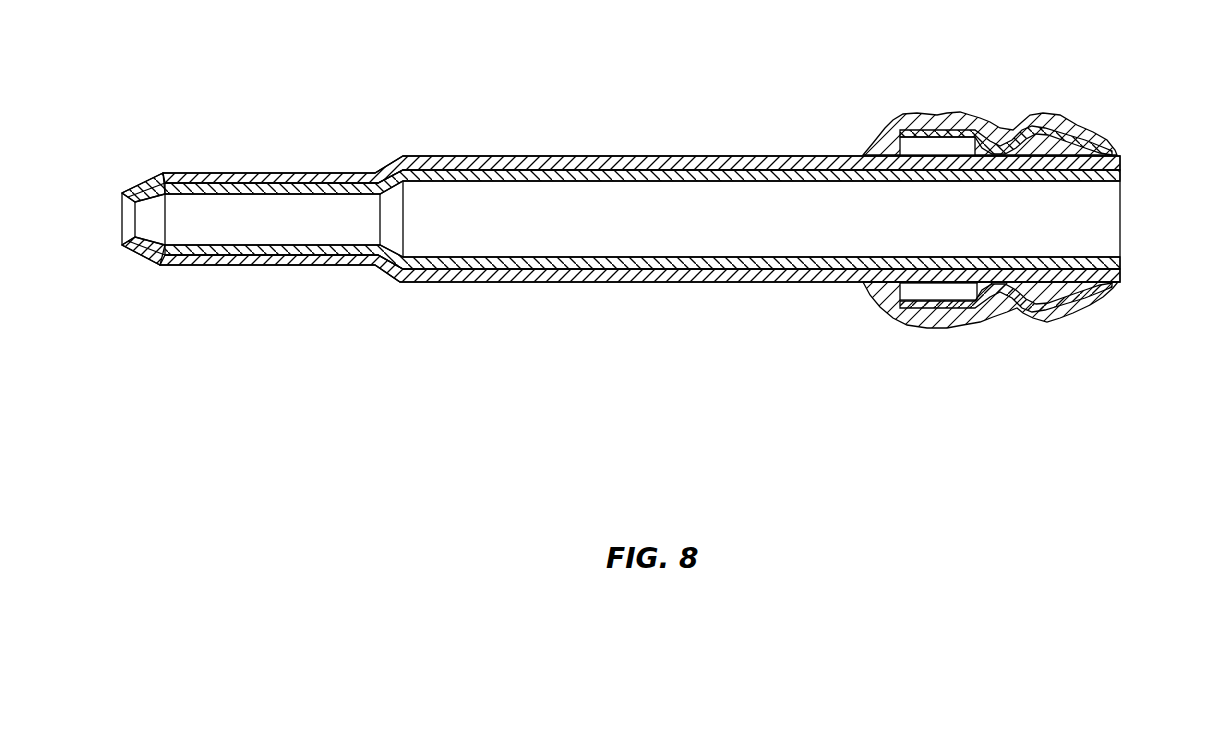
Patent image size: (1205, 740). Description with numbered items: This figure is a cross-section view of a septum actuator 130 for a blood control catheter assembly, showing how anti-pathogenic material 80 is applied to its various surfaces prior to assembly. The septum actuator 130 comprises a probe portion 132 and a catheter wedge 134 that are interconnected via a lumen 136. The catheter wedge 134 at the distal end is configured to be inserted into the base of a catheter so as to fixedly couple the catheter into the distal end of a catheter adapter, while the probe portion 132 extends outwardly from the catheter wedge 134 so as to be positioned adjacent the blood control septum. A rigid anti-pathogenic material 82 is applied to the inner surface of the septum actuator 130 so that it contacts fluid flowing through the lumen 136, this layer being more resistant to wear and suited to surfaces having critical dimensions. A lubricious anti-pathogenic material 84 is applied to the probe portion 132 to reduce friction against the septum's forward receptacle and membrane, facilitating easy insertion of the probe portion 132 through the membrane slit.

The anti-pathogenic material 80 is at (1073, 179).
The rigid anti-pathogenic material 82 is at (473, 257).
The lubricious anti-pathogenic material 84 is at (985, 108).
The septum actuator 130 is at (583, 283).
The probe portion 132 is at (928, 303).
The catheter wedge 134 is at (185, 268).
The lumen 136 is at (765, 234).